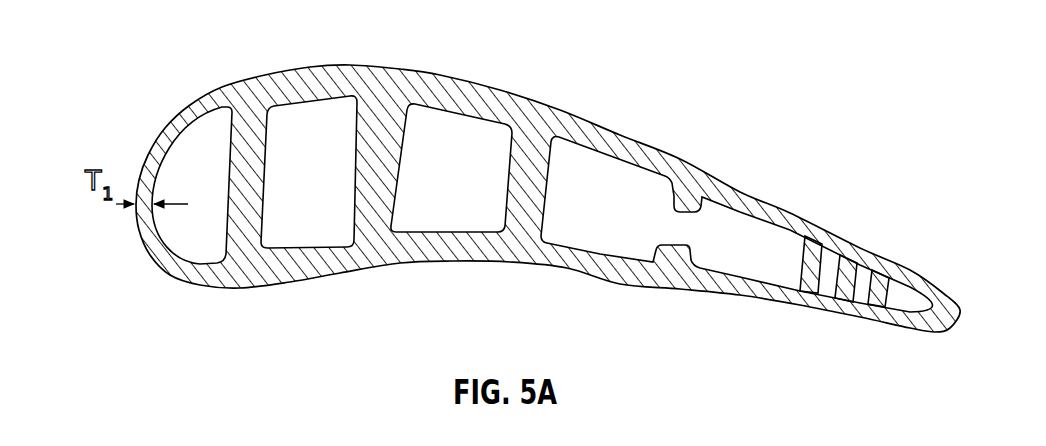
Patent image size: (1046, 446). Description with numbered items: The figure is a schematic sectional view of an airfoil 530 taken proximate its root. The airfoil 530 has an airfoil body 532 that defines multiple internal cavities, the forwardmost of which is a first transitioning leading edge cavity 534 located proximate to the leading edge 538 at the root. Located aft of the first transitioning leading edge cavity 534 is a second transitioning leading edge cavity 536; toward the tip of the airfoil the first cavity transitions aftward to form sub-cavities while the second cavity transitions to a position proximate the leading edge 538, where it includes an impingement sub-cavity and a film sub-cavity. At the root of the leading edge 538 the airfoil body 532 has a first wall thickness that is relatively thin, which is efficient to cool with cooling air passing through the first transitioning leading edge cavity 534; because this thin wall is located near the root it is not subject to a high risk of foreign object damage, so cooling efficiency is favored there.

The airfoil 530 is at (510, 173).
The airfoil body 532 is at (692, 190).
The first transitioning leading edge cavity 534 is at (207, 165).
The second transitioning leading edge cavity 536 is at (318, 130).
The leading edge 538 is at (150, 157).